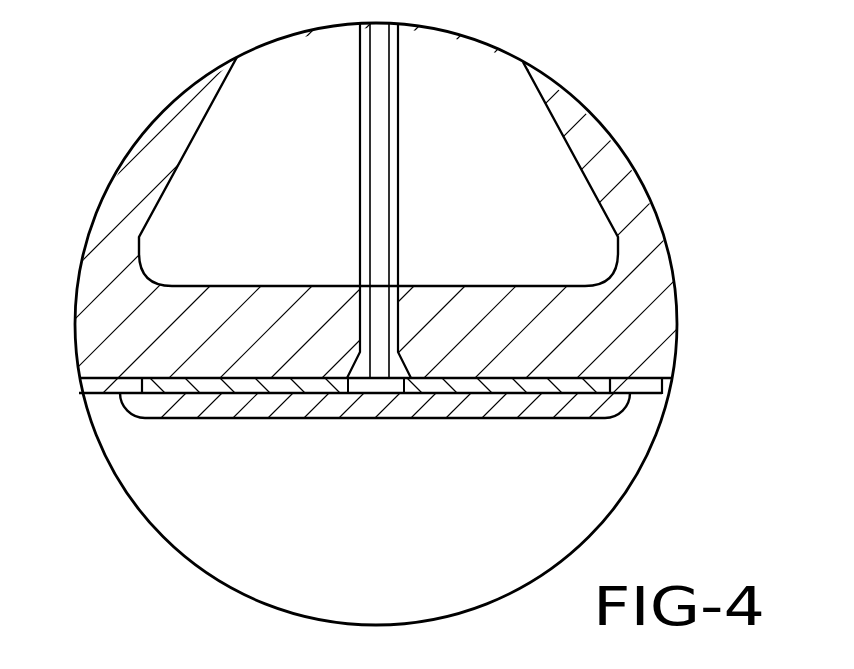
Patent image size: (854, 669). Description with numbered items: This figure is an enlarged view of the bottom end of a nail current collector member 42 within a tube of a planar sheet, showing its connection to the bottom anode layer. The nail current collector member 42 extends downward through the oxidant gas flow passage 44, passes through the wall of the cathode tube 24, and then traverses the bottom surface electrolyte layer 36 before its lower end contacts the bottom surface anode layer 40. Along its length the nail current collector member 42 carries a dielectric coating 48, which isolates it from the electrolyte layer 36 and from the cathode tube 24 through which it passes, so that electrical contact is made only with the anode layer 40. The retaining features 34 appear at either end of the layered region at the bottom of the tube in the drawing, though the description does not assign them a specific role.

The cathode tube 24 is at (265, 328).
The retaining lip 34 is at (107, 397).
The bottom surface electrolyte layer 36 is at (243, 388).
The bottom surface anode layer 40 is at (467, 410).
The nail current collector member 42 is at (377, 160).
The oxidant gas flow passage 44 is at (292, 171).
The dielectric coating 48 is at (395, 237).